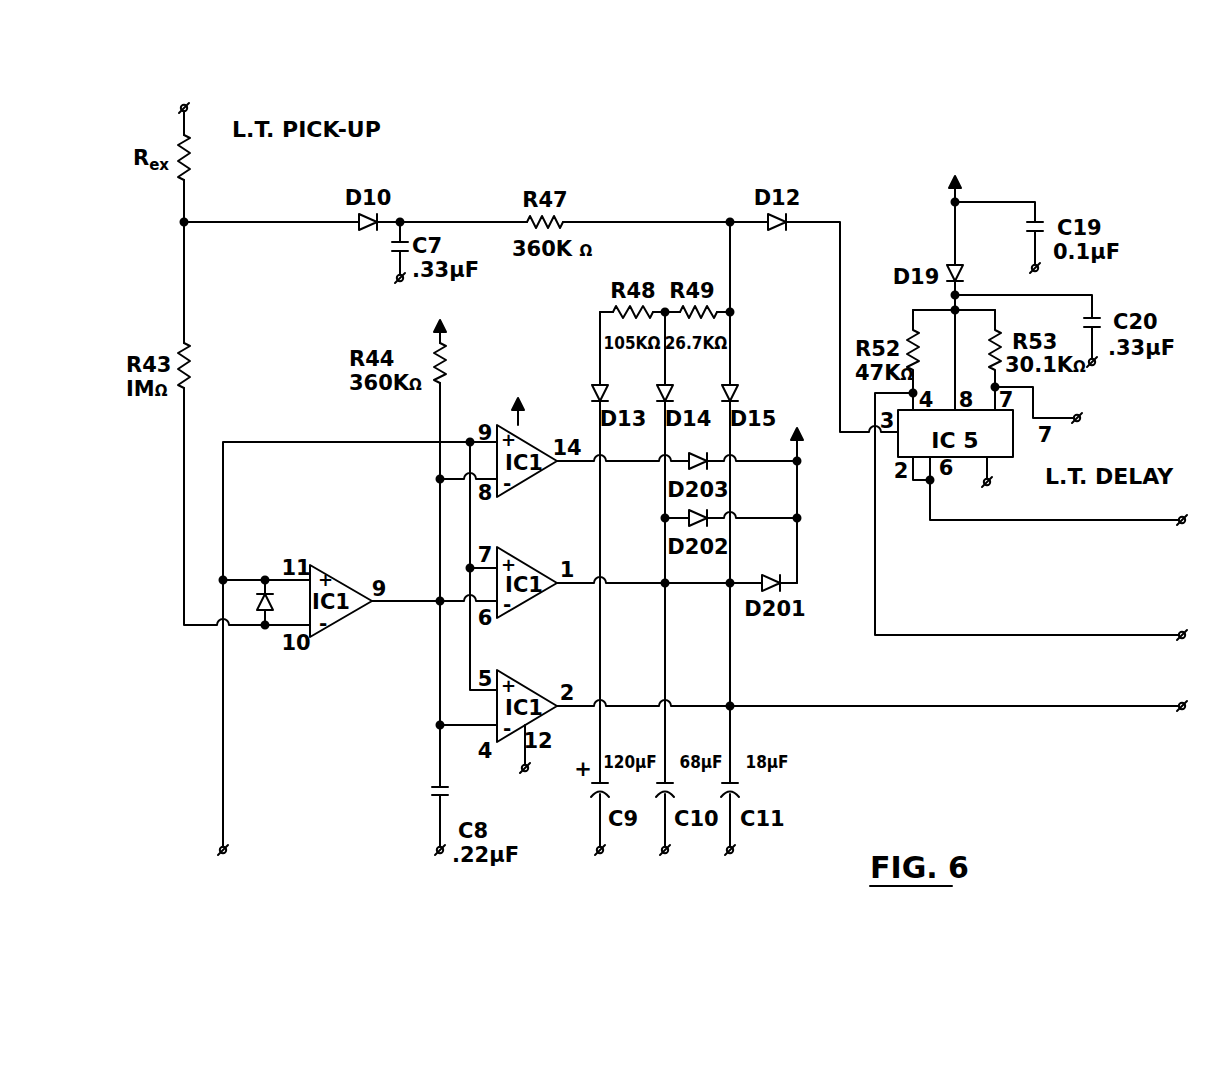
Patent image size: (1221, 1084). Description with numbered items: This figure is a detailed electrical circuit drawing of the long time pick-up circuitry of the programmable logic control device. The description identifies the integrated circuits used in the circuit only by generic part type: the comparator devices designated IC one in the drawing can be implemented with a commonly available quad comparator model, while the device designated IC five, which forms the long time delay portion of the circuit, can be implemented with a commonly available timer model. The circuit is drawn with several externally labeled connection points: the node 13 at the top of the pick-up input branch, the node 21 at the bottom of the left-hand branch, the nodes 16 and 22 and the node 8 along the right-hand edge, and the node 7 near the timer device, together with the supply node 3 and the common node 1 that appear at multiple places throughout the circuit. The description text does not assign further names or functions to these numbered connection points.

The L.T. pick-up input terminal 13 is at (184, 106).
The reference terminal 21 is at (339, 664).
The output terminal 16 is at (889, 706).
The output terminal 22 is at (1048, 520).
The output terminal 8 is at (1061, 495).
The output terminal 7 is at (1049, 409).
The supply voltage node 3 is at (698, 304).
The ground node 1 is at (747, 572).